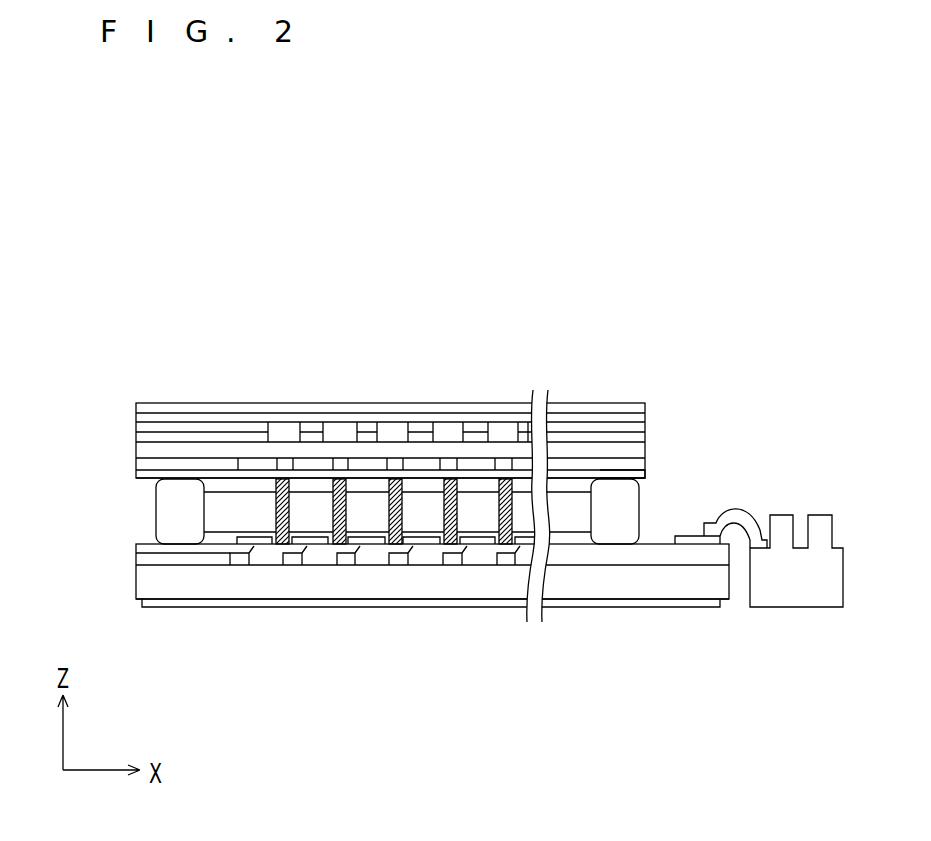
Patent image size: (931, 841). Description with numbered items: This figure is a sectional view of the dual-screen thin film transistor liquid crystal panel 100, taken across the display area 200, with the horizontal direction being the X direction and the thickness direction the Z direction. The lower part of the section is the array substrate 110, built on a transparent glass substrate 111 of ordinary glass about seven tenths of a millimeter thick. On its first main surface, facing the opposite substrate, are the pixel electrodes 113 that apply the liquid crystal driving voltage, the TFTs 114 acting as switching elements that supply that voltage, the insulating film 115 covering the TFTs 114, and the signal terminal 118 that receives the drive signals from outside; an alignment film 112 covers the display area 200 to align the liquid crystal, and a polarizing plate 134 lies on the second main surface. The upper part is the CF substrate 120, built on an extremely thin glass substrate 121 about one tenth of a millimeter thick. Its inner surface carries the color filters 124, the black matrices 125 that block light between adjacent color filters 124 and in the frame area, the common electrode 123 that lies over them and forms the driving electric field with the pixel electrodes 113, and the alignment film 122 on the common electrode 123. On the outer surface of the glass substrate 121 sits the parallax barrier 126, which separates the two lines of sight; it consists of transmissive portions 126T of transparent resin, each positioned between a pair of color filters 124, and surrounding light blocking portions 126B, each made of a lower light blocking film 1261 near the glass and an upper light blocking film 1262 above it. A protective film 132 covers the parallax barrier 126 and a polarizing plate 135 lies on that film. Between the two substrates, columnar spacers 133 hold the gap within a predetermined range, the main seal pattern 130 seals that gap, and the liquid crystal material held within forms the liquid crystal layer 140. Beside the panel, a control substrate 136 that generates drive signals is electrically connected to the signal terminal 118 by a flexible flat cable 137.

The liquid crystal panel 100 is at (712, 265).
The display area 200 is at (586, 223).
The array substrate 110 is at (120, 595).
The glass substrate 111 is at (580, 578).
The alignment film 112 is at (217, 538).
The pixel electrodes 113 is at (477, 540).
The TFTs 114 is at (399, 556).
The insulating film 115 is at (318, 555).
The signal terminal 118 is at (694, 540).
The CF substrate 120 is at (120, 487).
The glass substrate 121 is at (258, 448).
The alignment film 122 is at (217, 483).
The common electrode 123 is at (647, 477).
The color filters 124 is at (368, 465).
The black matrices 125 is at (338, 470).
The parallax barrier 126 is at (518, 312).
The transmissive portions 126T is at (288, 369).
The light blocking portions 126B is at (552, 355).
The lower light blocking film 1261 is at (480, 440).
The upper light blocking film 1262 is at (475, 428).
The main seal pattern 130 is at (600, 500).
The protective film 132 is at (145, 410).
The columnar spacers 133 is at (450, 550).
The polarizing plate 134 is at (633, 606).
The polarizing plate 135 is at (203, 412).
The control substrate 136 is at (797, 592).
The flexible flat cable 137 is at (743, 513).
The liquid crystal layer 140 is at (262, 512).